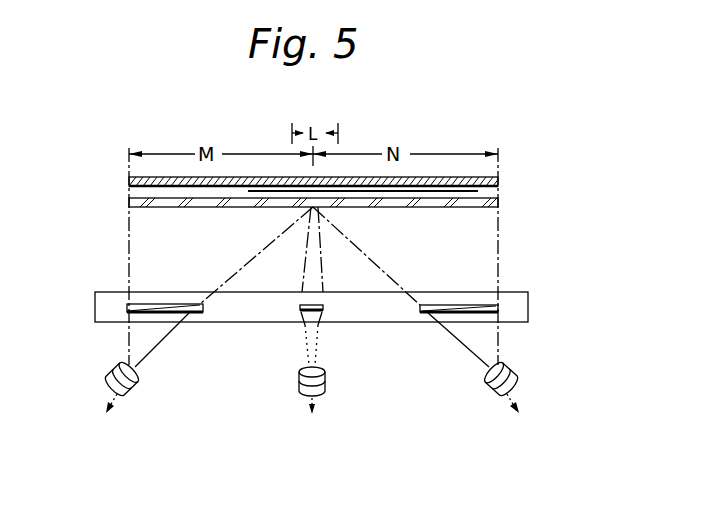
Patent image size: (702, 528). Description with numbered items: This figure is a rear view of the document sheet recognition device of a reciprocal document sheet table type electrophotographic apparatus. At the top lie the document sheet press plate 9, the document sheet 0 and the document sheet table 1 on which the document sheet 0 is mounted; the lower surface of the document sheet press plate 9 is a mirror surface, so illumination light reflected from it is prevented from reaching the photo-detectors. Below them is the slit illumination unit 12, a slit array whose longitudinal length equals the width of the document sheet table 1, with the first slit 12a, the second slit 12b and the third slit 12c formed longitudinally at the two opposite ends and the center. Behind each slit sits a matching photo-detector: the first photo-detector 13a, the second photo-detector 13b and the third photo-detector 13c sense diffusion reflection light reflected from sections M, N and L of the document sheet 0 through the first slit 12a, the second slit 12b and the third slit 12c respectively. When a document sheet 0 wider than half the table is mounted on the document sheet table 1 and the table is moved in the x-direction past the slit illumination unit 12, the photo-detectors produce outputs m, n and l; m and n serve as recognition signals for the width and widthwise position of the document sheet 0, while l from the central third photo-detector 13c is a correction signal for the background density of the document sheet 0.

The document sheet press plate 9 is at (490, 178).
The document sheet 0 is at (478, 191).
The document sheet table 1 is at (480, 208).
The slit illumination unit 12 is at (530, 305).
The first slit 12a is at (155, 304).
The second slit 12b is at (450, 305).
The third slit 12c is at (322, 300).
The first photo-detector 13a is at (112, 370).
The second photo-detector 13b is at (490, 385).
The third photo-detector 13c is at (300, 373).